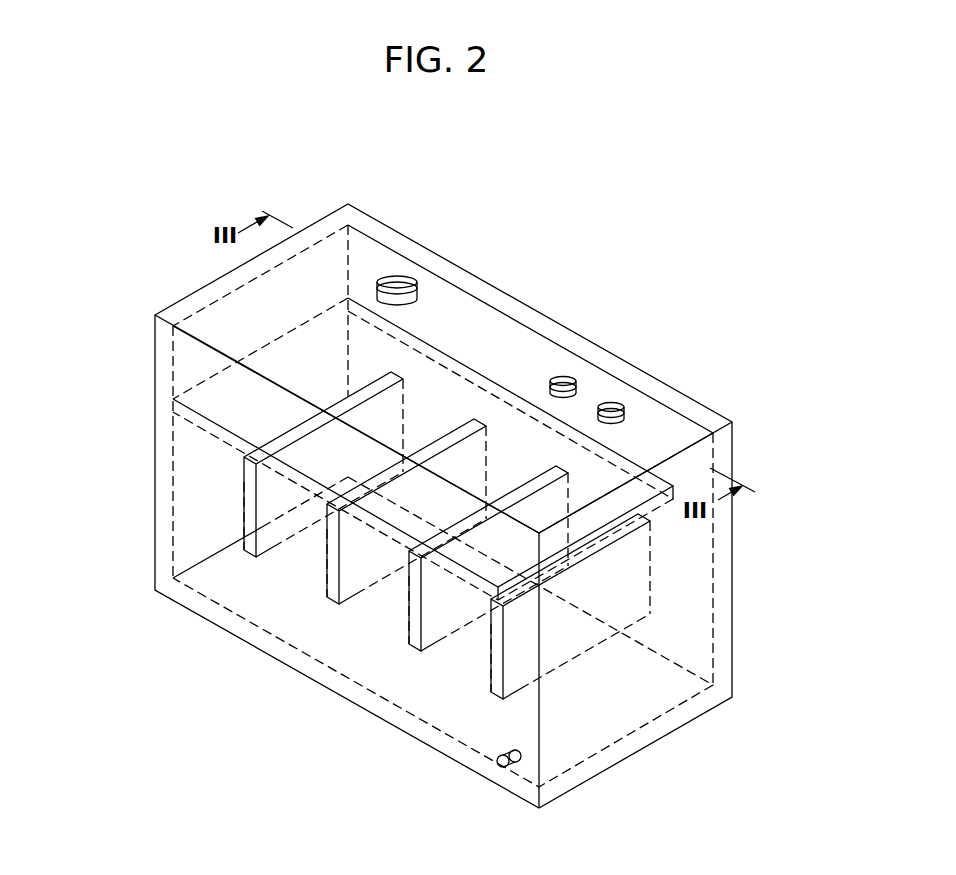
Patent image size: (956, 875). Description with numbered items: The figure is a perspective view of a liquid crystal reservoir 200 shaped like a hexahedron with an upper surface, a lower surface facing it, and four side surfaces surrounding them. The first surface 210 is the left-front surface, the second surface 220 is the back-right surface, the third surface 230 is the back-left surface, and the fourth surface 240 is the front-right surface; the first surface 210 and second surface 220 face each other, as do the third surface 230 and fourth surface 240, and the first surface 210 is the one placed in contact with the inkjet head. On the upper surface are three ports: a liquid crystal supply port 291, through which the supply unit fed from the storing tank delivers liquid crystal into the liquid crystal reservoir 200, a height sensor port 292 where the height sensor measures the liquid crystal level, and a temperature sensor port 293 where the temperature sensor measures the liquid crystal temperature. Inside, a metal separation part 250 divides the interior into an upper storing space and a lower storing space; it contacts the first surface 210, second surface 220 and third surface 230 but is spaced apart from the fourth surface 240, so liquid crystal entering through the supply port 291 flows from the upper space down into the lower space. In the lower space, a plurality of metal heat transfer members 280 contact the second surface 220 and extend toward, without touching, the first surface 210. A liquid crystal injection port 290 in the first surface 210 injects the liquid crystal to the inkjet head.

The liquid crystal reservoir 200 is at (471, 160).
The first surface 210 is at (243, 404).
The second surface 220 is at (492, 323).
The third surface 230 is at (217, 338).
The fourth surface 240 is at (683, 612).
The separation part 250 is at (207, 432).
The heat transfer member 280 is at (365, 548).
The liquid crystal injection port 290 is at (503, 767).
The liquid crystal supply port 291 is at (388, 280).
The height sensor port 292 is at (566, 378).
The temperature sensor port 293 is at (614, 405).